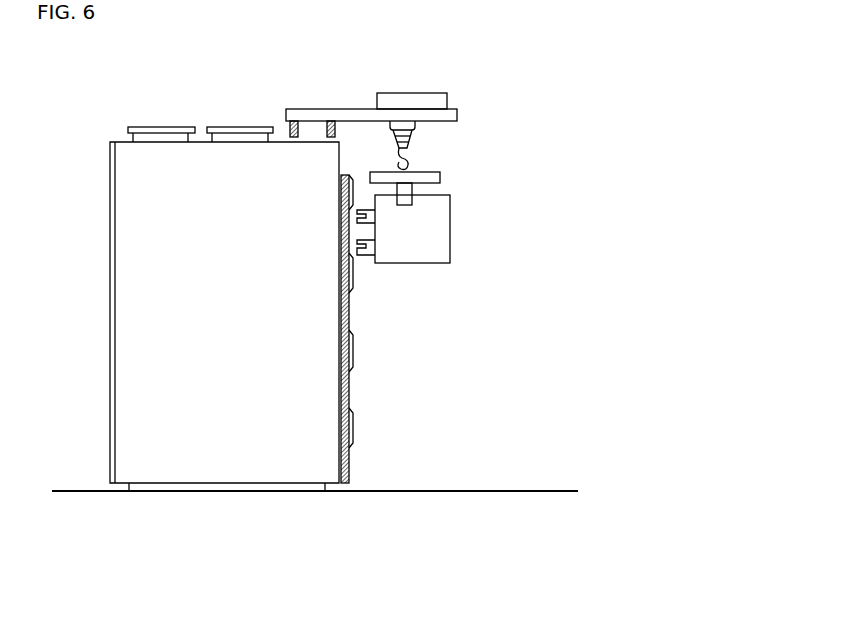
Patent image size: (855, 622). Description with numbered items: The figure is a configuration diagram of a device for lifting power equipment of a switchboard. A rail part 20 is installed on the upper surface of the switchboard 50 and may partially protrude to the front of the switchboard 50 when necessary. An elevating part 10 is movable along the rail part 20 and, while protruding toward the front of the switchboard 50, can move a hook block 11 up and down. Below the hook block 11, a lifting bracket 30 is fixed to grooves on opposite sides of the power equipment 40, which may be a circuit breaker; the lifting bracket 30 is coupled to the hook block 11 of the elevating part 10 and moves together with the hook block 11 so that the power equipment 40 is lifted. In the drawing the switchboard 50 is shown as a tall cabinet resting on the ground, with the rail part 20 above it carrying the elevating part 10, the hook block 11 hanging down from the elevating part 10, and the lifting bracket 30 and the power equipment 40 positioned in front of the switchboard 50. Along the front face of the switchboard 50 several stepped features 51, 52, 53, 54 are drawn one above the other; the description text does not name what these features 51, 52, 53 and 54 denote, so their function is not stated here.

The elevating part 10 is at (407, 99).
The hook block 11 is at (412, 158).
The rail part 20 is at (327, 108).
The lifting bracket 30 is at (442, 179).
The power equipment 40 is at (452, 229).
The switchboard 50 is at (236, 470).
The first step 51 is at (355, 430).
The second step 52 is at (354, 357).
The third step 53 is at (354, 277).
The fourth step 54 is at (358, 192).